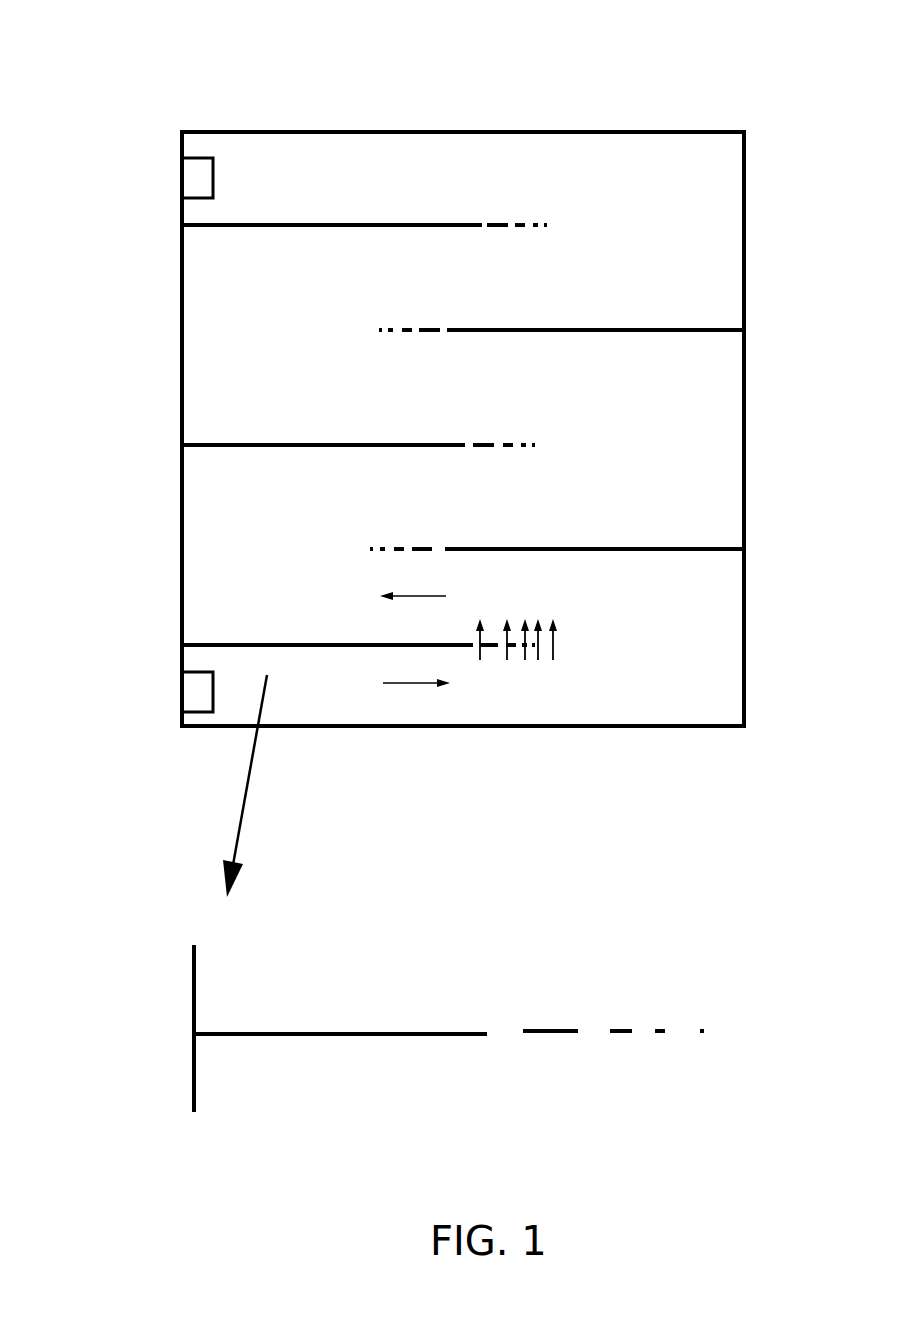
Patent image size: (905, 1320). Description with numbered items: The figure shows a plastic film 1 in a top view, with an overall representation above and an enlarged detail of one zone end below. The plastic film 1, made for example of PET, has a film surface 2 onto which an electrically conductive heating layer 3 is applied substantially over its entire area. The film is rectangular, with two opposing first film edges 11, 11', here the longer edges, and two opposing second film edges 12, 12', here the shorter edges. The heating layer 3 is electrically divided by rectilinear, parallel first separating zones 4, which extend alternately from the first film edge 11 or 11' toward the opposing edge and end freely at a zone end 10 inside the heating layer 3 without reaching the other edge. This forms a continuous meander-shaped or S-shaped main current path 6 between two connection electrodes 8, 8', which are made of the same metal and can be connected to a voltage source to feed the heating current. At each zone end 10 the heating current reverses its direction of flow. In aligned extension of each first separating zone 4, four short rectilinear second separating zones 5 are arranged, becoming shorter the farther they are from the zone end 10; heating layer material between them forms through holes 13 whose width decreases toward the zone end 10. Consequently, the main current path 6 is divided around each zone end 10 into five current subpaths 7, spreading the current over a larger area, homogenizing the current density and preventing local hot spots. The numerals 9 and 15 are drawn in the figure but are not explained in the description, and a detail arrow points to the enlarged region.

The plastic film 1 is at (183, 82).
The film surface 2 is at (390, 131).
The heating layer 3 is at (257, 355).
The first separating zones 4 is at (256, 224).
The second separating zones 5 is at (546, 224).
The main current path 6 is at (420, 598).
The current subpaths 7 is at (487, 620).
The connection electrode 8 is at (167, 175).
The connection electrode 8' is at (170, 692).
The opening 9 is at (572, 237).
The zone end 10 is at (481, 222).
The first film edge 11 is at (143, 622).
The first film edge 11' is at (784, 429).
The second film edge 12 is at (463, 101).
The second film edge 12' is at (463, 758).
The through holes 13 is at (595, 1030).
The wall section 15 is at (178, 253).